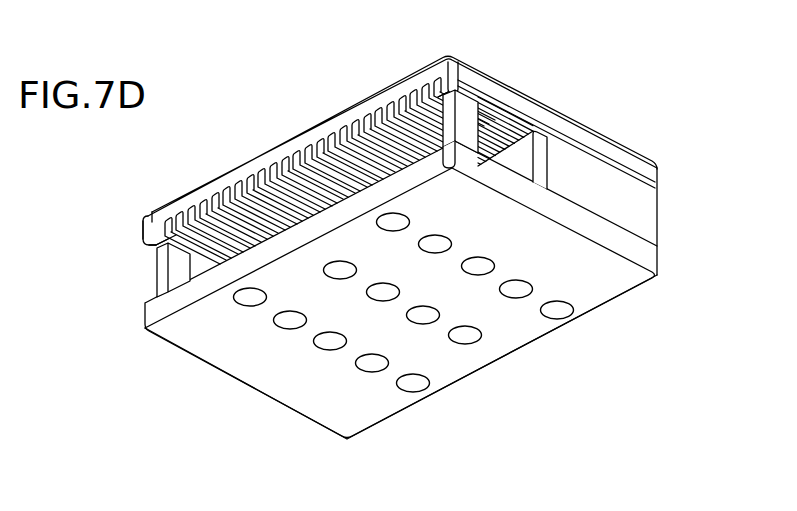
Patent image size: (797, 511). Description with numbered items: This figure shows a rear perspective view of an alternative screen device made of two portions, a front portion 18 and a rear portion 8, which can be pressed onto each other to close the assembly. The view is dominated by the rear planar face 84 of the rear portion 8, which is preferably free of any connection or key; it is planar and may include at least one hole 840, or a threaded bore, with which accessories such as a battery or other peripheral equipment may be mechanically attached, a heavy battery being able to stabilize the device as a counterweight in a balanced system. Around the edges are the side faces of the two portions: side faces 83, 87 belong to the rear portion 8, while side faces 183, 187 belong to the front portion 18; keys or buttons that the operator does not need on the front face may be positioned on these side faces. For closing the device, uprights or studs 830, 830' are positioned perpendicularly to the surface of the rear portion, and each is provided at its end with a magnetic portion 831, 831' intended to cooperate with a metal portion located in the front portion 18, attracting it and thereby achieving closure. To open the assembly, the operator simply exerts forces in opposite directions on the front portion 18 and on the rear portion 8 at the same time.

The rear portion 8 is at (218, 376).
The rear planar face 84 is at (325, 392).
The hole 840 is at (423, 380).
The front portion 18 is at (551, 90).
The side face of the front portion 187 is at (607, 147).
The side face of the rear portion 87 is at (622, 213).
The side face of the rear portion 83 is at (317, 198).
The side face of the front portion 183 is at (353, 118).
The upright 830 is at (117, 274).
The upright 830' is at (404, 68).
The magnetic portion 831 is at (178, 192).
The magnetic portion 831' is at (486, 98).